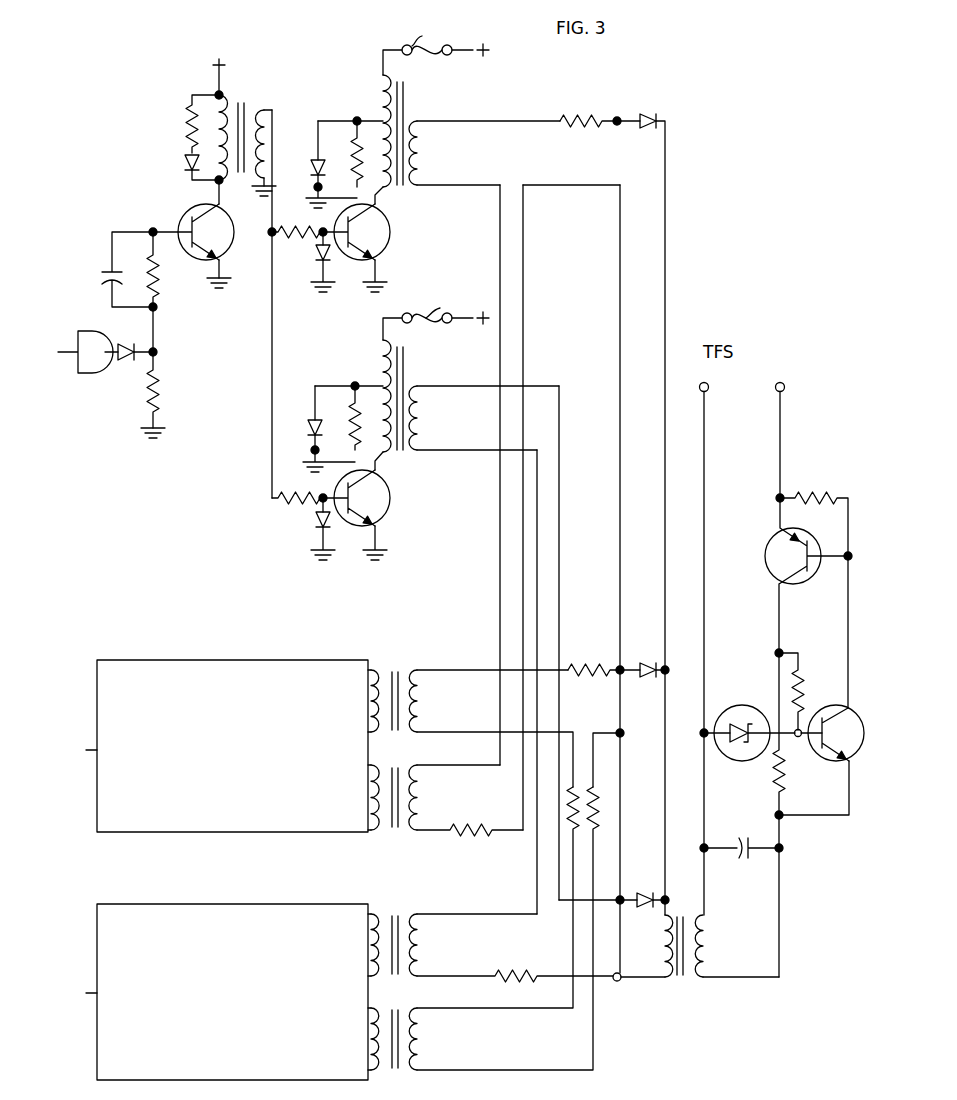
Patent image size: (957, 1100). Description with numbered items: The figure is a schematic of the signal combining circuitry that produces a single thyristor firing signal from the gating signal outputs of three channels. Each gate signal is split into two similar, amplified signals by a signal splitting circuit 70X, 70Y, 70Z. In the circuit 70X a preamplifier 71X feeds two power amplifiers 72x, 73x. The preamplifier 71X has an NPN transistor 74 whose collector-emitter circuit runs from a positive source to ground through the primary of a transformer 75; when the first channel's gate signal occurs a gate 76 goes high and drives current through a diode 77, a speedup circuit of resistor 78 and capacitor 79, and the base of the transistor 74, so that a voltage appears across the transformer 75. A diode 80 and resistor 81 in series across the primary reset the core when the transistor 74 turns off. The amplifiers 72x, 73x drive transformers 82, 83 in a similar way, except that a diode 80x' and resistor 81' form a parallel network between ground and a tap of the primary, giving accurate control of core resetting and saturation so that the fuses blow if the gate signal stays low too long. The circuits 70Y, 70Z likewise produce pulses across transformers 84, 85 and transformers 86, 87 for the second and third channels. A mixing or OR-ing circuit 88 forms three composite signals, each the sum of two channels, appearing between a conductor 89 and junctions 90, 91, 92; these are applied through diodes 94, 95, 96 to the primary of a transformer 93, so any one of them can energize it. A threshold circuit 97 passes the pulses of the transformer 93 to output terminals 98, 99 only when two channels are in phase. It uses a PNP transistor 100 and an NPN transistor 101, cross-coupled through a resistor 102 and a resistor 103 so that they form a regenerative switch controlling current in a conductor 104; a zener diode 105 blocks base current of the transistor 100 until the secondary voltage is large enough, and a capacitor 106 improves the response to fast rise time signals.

The preamplifier 71X is at (176, 218).
The power amplifier 72x is at (393, 234).
The power amplifier 73x is at (393, 500).
The NPN transistor 74 is at (221, 254).
The transformer 75 is at (237, 106).
The gate 76 is at (82, 374).
The diode 77 is at (130, 343).
The resistor 78 is at (157, 279).
The capacitor 79 is at (104, 270).
The diode 80 is at (186, 163).
The diode 80x' is at (314, 164).
The resistor 81 is at (183, 124).
The resistor 81' is at (346, 154).
The transformer 82 is at (413, 72).
The transformer 83 is at (413, 338).
The transformer 84 is at (398, 670).
The transformer 85 is at (398, 768).
The transformer 86 is at (398, 914).
The transformer 87 is at (398, 1010).
The mixing or OR-ing circuit 88 is at (597, 597).
The conductor 89 is at (622, 368).
The junction 90 is at (617, 118).
The junction 91 is at (622, 666).
The junction 92 is at (620, 975).
The transformer 93 is at (680, 979).
The diode 94 is at (648, 125).
The diode 95 is at (652, 678).
The diode 96 is at (654, 892).
The threshold circuit 97 is at (745, 655).
The output terminal 98 is at (708, 391).
The output terminal 99 is at (784, 391).
The PNP transistor 100 is at (848, 714).
The NPN transistor 101 is at (798, 584).
The resistor 102 is at (802, 686).
The resistor 103 is at (787, 786).
The conductor 104 is at (780, 920).
The zener or breakdown diode 105 is at (740, 762).
The capacitor 106 is at (750, 857).
The signal splitting circuit 70X is at (329, 331).
The signal splitting circuit 70Y is at (263, 761).
The signal splitting circuit 70Z is at (263, 1005).